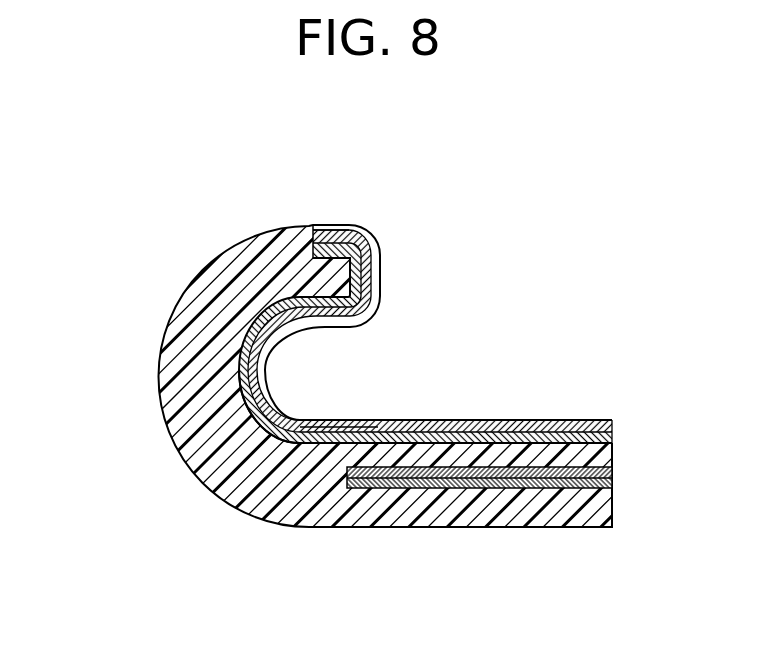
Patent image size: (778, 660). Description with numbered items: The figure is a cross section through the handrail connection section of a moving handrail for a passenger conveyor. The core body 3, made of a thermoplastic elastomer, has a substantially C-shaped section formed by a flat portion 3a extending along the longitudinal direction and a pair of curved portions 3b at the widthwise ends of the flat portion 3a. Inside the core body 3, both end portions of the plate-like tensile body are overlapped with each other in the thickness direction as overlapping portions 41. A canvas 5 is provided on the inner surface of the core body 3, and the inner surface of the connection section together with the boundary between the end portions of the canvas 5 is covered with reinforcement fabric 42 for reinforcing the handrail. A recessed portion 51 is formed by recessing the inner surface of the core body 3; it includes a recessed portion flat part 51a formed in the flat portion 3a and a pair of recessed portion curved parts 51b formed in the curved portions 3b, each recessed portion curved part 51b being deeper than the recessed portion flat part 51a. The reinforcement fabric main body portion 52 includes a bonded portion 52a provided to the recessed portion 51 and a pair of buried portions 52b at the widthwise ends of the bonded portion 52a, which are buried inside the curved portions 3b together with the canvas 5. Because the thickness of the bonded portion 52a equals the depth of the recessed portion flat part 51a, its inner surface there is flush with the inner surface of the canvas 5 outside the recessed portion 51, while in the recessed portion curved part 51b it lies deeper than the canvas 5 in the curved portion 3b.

The core body 3 is at (389, 415).
The flat portion 3a is at (468, 520).
The curved portion 3b is at (178, 387).
The canvas 5 is at (372, 332).
The overlapping portions 41 is at (479, 492).
The reinforcement fabric 42 is at (380, 279).
The recessed portion 51 is at (366, 368).
The recessed portion flat part 51a is at (552, 421).
The recessed portion curved part 51b is at (258, 446).
The reinforcement fabric main body portion 52 is at (431, 299).
The bonded portion 52a is at (478, 421).
The buried portion 52b is at (331, 231).